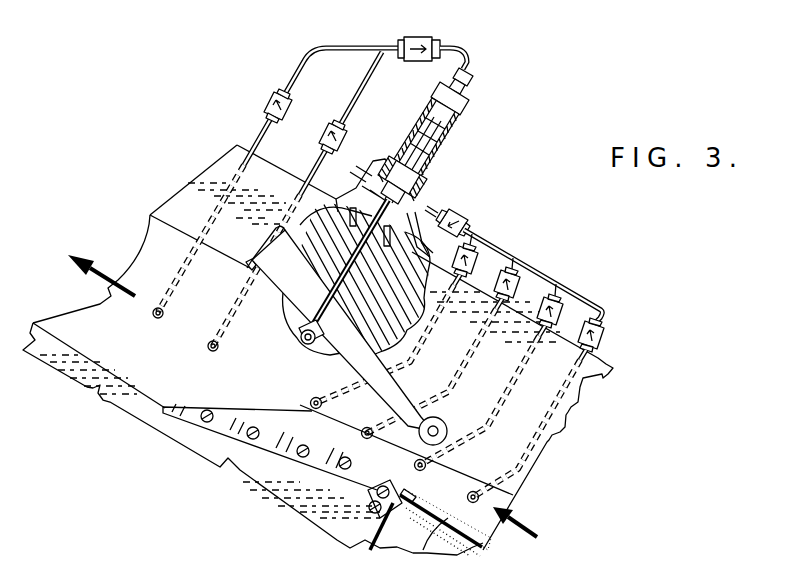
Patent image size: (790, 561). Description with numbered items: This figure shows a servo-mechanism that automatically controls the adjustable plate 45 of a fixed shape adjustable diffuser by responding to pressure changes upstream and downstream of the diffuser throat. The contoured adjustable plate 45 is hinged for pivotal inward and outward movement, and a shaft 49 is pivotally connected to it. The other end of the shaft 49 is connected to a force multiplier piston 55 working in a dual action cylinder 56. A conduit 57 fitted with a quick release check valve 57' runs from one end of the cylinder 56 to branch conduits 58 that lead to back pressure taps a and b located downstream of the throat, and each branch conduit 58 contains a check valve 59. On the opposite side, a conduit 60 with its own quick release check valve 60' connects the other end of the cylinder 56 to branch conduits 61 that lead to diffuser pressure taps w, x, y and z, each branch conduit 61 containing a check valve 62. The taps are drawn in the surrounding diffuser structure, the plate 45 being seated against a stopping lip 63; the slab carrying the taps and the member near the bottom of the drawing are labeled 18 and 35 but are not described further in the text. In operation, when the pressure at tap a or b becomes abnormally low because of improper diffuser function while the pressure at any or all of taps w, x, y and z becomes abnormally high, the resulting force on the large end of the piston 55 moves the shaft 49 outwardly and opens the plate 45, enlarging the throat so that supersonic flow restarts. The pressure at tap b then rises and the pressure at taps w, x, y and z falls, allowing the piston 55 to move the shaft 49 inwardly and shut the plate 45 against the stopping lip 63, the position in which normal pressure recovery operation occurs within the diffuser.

The branch conduit 58 is at (298, 68).
The check valve 59 is at (308, 134).
The cylinder 56 is at (404, 134).
The conduit 57 is at (475, 72).
The quick release check valve 57' is at (502, 38).
The force multiplier piston 55 is at (440, 167).
The quick release check valve 60' is at (468, 212).
The conduit 60 is at (527, 279).
The check valve 62 is at (605, 330).
The branch conduit 61 is at (422, 338).
The stopping lip 63 is at (248, 272).
The shaft 49 is at (313, 277).
The adjustable plate 45 is at (293, 342).
The slab 18 is at (502, 500).
The member 35 is at (424, 539).
The back pressure tap a is at (147, 317).
The back pressure tap b is at (207, 346).
The diffuser pressure tap w is at (310, 402).
The diffuser pressure tap x is at (362, 432).
The diffuser pressure tap y is at (415, 464).
The diffuser pressure tap z is at (468, 496).